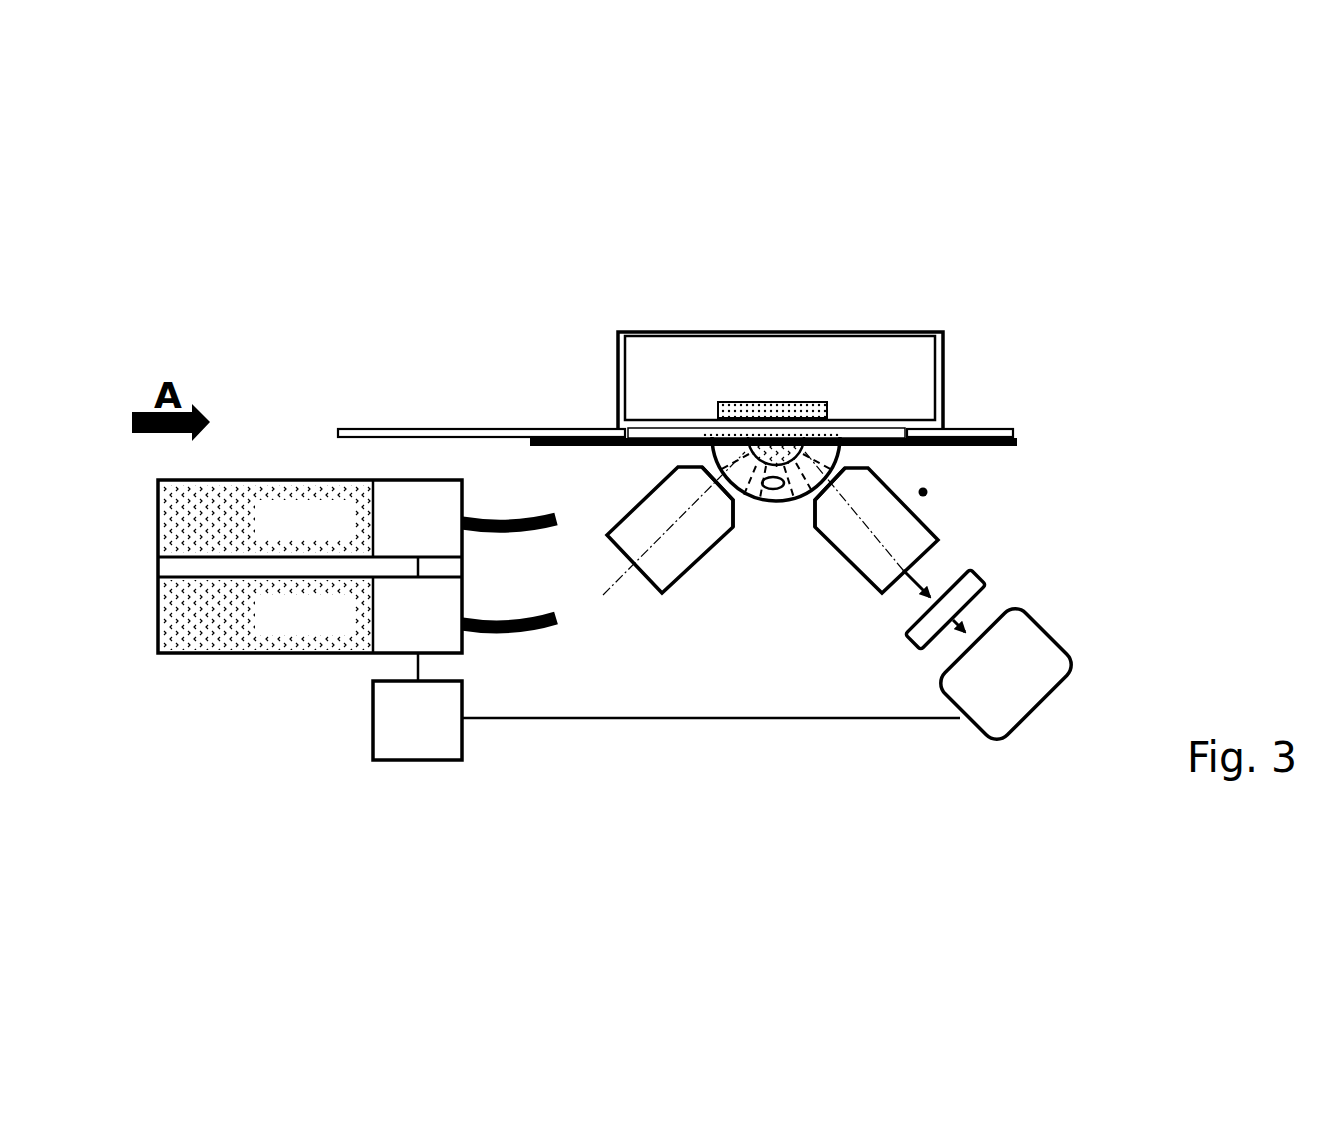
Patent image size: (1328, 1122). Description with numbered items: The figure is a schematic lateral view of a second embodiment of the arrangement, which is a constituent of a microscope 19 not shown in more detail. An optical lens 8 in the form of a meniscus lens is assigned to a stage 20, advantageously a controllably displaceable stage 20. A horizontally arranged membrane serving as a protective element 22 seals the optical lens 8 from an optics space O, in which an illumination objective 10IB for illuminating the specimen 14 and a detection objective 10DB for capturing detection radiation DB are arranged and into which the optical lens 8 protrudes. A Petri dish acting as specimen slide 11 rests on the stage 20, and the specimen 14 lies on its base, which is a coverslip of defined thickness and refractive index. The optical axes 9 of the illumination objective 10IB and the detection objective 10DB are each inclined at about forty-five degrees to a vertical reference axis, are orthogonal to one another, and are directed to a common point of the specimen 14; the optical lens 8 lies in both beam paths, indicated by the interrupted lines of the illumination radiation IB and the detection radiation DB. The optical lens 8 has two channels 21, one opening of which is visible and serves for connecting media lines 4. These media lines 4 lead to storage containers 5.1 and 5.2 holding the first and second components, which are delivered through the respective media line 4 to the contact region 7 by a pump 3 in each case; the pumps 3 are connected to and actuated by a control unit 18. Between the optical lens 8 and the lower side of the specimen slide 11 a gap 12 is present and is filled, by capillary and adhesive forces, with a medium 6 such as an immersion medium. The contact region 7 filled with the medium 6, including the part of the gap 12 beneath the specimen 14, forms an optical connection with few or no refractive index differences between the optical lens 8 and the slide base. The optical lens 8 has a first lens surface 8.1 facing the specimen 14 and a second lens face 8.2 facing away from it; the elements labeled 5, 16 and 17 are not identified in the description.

The pump 3 is at (410, 533).
The media line 4 is at (525, 535).
The illumination opening 5 is at (797, 472).
The storage container 5.1 is at (160, 524).
The storage container 5.2 is at (160, 618).
The medium 6 is at (242, 627).
The contact region 7 is at (707, 427).
The optical lens 8 is at (764, 500).
The first lens surface 8.1 is at (838, 447).
The second lens face 8.2 is at (707, 441).
The optical axis 9 is at (632, 568).
The illumination objective 10IB is at (658, 565).
The detection objective 10DB is at (883, 570).
The specimen slide 11 is at (860, 427).
The gap 12 is at (887, 433).
The specimen 14 is at (740, 402).
The filter 16 is at (986, 587).
The detector 17 is at (995, 690).
The control unit 18 is at (404, 731).
The microscope 19 is at (620, 204).
The stage 20 is at (425, 428).
The channel 21 is at (783, 490).
The protective element 22 is at (563, 447).
The illumination radiation IB is at (755, 473).
The detection radiation DB is at (922, 578).
The optics space O is at (925, 493).